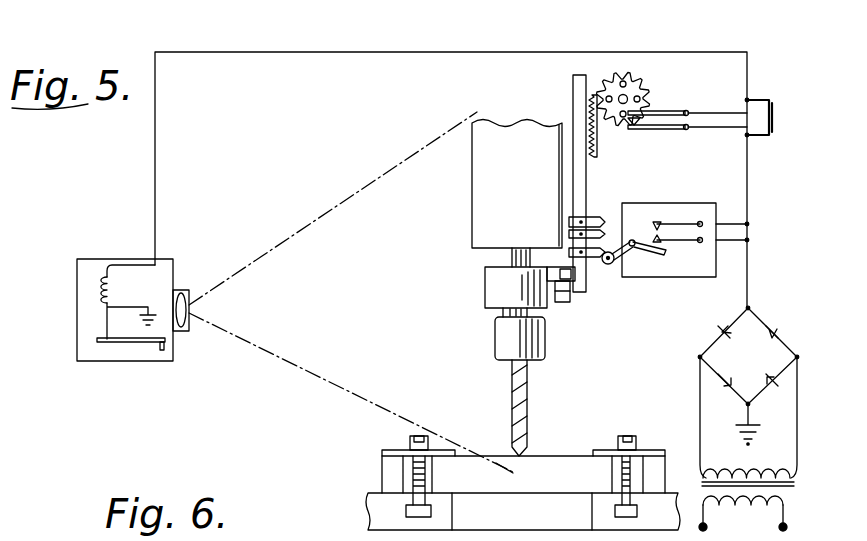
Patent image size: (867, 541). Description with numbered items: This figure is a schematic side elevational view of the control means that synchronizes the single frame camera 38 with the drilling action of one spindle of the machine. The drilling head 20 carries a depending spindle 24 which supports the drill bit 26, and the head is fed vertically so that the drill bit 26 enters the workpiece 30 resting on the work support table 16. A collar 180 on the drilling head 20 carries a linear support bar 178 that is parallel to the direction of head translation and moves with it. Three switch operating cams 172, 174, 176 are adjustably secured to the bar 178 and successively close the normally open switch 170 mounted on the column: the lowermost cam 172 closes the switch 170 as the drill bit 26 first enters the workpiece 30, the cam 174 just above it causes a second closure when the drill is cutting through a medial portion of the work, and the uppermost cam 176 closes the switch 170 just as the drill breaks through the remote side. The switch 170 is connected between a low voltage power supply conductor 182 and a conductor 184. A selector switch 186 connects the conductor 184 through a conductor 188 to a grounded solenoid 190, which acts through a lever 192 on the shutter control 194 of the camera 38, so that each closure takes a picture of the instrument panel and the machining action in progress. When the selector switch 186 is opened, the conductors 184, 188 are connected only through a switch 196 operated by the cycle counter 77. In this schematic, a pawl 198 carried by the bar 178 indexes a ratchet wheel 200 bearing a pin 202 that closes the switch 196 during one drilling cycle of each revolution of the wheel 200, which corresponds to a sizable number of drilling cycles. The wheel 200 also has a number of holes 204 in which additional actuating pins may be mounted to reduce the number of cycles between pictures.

The work support table 16 is at (327, 498).
The drilling head 20 is at (468, 207).
The spindle 24 is at (427, 340).
The drill bit 26 is at (450, 391).
The workpiece 30 is at (567, 455).
The single frame camera 38 is at (90, 366).
The cycle counter 77 is at (604, 74).
The switch 170 is at (700, 183).
The lowermost cam 172 is at (600, 304).
The cam 174 is at (650, 197).
The uppermost cam 176 is at (640, 172).
The linear support bar 178 is at (528, 160).
The collar 180 is at (440, 279).
The low voltage power supply conductor 182 is at (785, 270).
The conductor 184 is at (750, 173).
The selector switch 186 is at (790, 82).
The conductor 188 is at (244, 55).
The solenoid 190 is at (58, 299).
The lever 192 is at (110, 400).
The shutter control 194 is at (202, 373).
The switch 196 is at (710, 152).
The pawl 198 is at (522, 92).
The ratchet wheel 200 is at (708, 32).
The pin 202 is at (700, 107).
The holes 204 is at (650, 27).